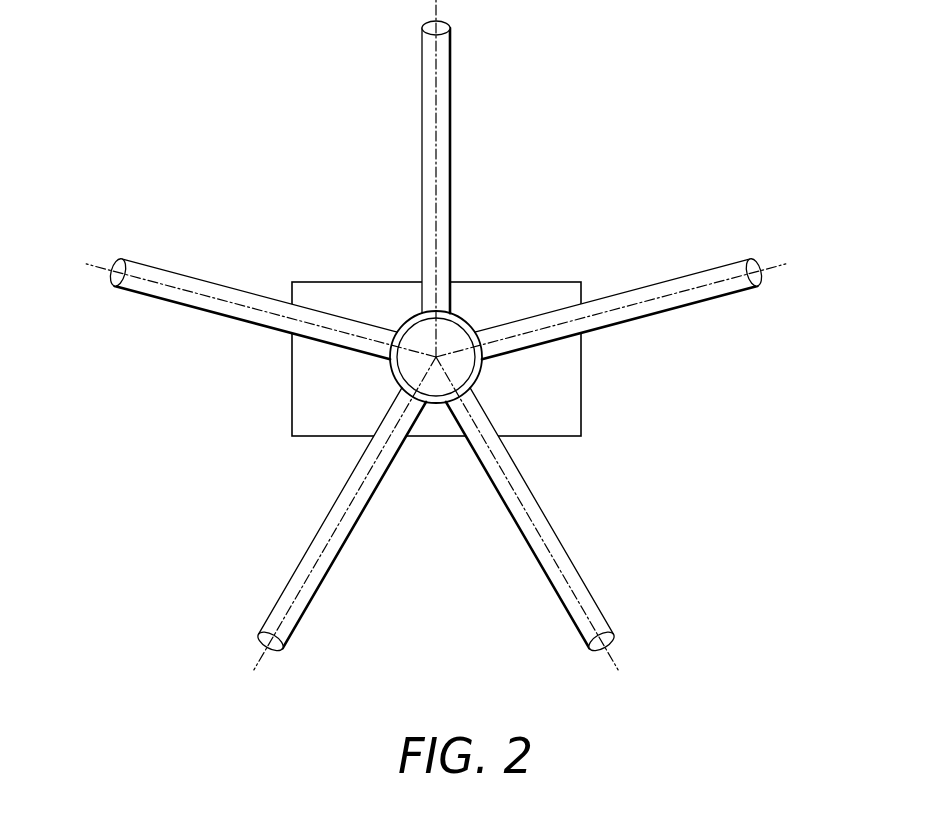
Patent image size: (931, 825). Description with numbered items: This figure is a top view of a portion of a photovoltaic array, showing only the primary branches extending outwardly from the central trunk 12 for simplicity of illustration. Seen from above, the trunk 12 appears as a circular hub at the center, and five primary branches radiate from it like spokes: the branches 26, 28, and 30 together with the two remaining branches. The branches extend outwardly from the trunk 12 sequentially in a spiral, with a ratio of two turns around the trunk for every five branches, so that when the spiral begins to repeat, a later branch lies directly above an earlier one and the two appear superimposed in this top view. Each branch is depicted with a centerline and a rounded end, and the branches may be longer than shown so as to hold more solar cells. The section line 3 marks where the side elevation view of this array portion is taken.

The central trunk 12 is at (484, 369).
The primary branch 28 is at (197, 277).
The primary branch 26 is at (675, 277).
The primary branch 30 is at (555, 533).
The section line 3- 3 is at (130, 700).